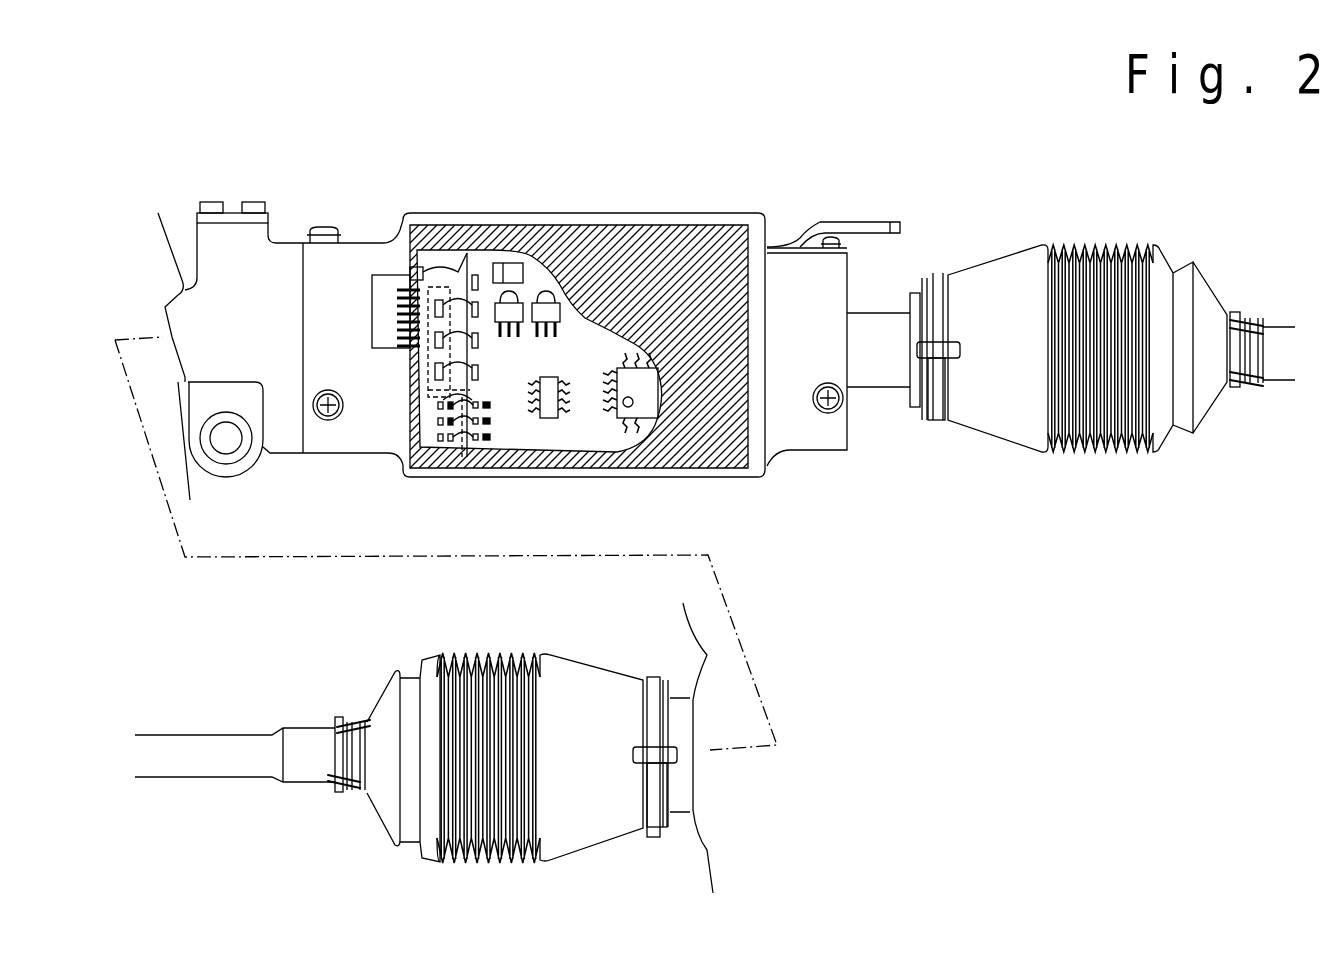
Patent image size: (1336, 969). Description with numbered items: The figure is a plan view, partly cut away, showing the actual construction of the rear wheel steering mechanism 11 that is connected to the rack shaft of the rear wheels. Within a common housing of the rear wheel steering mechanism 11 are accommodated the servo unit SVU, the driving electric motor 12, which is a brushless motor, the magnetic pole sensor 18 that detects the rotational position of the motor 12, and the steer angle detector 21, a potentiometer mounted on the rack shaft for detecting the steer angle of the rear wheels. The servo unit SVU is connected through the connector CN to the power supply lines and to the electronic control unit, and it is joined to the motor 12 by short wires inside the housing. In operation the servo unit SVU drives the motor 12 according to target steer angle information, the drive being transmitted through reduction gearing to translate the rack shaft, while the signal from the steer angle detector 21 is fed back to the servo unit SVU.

The rear wheel steering mechanism 11 is at (602, 532).
The driving electric motor 12 is at (683, 212).
The magnetic pole sensor 18 is at (795, 430).
The steer angle detector 21 is at (217, 252).
The connector CN is at (383, 290).
The servo unit SVU is at (660, 293).